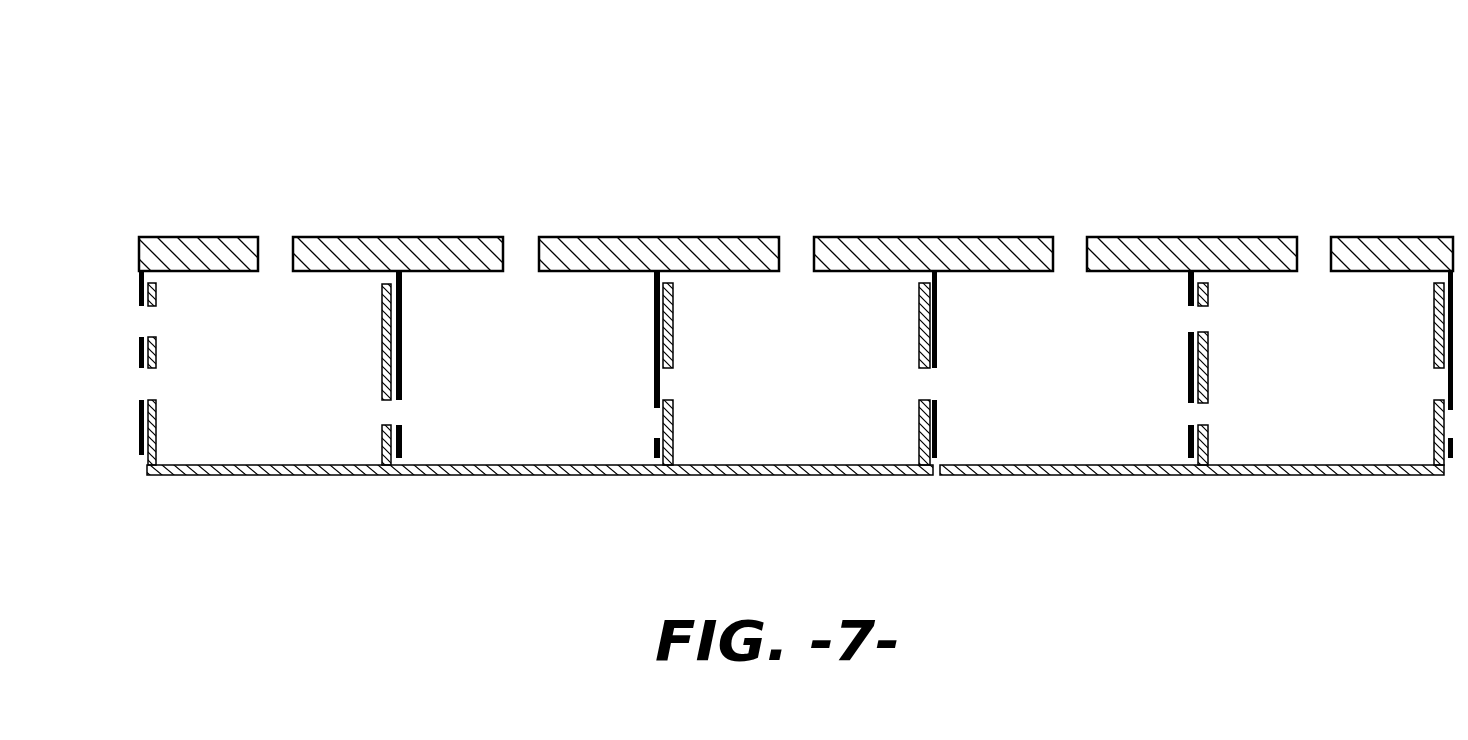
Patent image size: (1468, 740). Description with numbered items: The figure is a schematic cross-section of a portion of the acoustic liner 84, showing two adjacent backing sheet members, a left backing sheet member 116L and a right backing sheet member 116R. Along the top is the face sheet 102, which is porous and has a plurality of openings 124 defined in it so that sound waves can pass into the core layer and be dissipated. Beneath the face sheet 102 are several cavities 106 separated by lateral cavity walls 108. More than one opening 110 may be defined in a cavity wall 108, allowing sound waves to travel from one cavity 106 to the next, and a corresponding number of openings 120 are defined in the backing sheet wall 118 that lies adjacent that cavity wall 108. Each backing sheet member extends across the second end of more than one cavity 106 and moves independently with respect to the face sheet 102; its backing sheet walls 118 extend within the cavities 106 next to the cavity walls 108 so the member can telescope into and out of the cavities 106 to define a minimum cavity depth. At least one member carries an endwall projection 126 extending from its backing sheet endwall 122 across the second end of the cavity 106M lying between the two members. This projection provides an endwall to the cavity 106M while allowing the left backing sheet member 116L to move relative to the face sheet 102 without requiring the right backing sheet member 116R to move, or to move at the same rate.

The acoustic liner 84 is at (356, 114).
The face sheet 102 is at (349, 250).
The openings 124 is at (522, 247).
The lateral cavity walls 108 is at (140, 290).
The openings 110 is at (145, 385).
The openings 120 is at (405, 410).
The backing sheet wall 118 is at (672, 315).
The endwall projection 126 is at (1003, 463).
The left backing sheet member 116L is at (165, 482).
The cavities 106 is at (277, 425).
The cavity between the two members 106M is at (810, 428).
The backing sheet endwall 122 is at (333, 472).
The right backing sheet member 116R is at (977, 482).